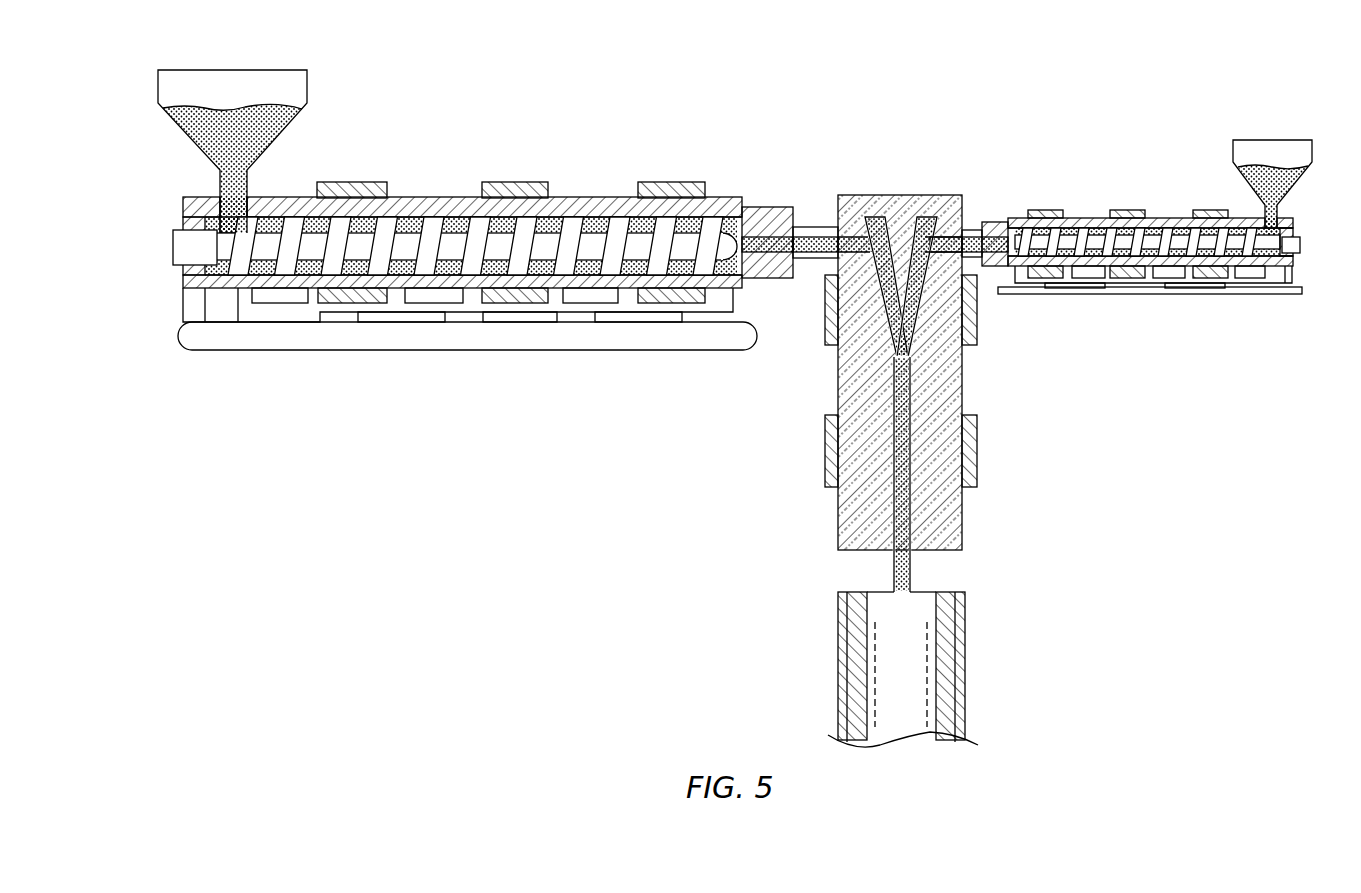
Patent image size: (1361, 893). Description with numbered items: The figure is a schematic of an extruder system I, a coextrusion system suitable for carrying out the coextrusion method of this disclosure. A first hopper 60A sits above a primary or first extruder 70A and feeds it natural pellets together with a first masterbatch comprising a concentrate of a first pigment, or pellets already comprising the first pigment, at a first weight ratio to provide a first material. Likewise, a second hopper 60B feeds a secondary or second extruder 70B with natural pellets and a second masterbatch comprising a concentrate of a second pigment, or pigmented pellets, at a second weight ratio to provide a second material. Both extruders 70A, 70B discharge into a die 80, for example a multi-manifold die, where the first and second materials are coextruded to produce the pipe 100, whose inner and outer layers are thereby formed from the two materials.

The extruder system I is at (920, 44).
The first hopper 60A is at (309, 77).
The second hopper 60B is at (1233, 143).
The first extruder 70A is at (432, 197).
The second extruder 70B is at (1165, 218).
The die 80 is at (806, 396).
The pipe 100 is at (965, 655).